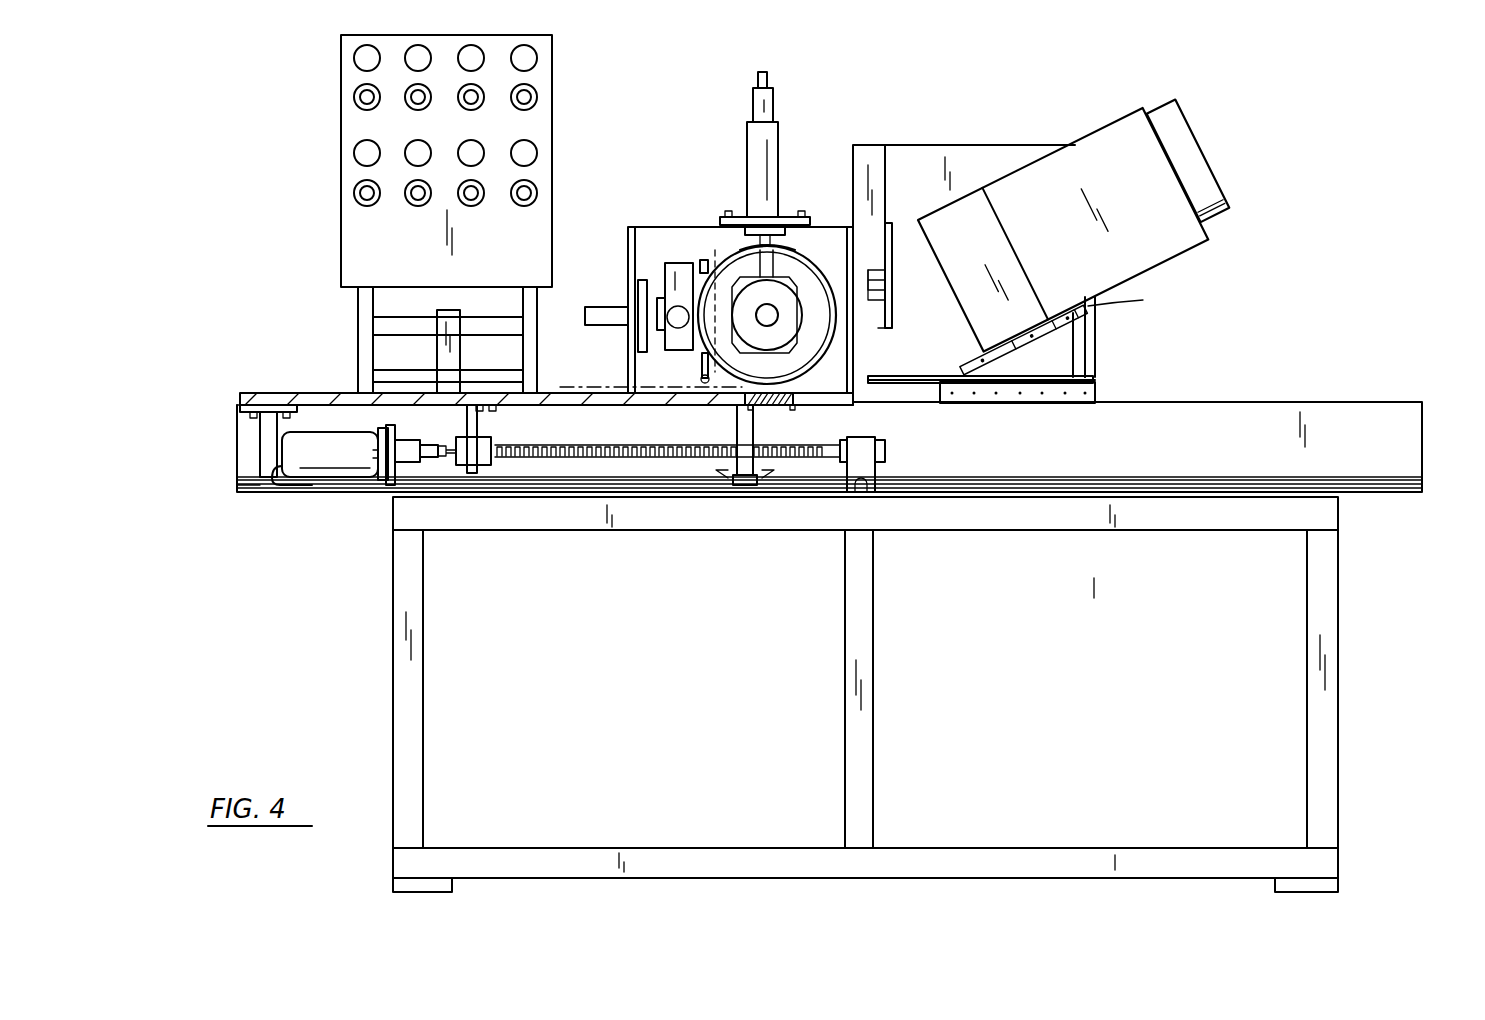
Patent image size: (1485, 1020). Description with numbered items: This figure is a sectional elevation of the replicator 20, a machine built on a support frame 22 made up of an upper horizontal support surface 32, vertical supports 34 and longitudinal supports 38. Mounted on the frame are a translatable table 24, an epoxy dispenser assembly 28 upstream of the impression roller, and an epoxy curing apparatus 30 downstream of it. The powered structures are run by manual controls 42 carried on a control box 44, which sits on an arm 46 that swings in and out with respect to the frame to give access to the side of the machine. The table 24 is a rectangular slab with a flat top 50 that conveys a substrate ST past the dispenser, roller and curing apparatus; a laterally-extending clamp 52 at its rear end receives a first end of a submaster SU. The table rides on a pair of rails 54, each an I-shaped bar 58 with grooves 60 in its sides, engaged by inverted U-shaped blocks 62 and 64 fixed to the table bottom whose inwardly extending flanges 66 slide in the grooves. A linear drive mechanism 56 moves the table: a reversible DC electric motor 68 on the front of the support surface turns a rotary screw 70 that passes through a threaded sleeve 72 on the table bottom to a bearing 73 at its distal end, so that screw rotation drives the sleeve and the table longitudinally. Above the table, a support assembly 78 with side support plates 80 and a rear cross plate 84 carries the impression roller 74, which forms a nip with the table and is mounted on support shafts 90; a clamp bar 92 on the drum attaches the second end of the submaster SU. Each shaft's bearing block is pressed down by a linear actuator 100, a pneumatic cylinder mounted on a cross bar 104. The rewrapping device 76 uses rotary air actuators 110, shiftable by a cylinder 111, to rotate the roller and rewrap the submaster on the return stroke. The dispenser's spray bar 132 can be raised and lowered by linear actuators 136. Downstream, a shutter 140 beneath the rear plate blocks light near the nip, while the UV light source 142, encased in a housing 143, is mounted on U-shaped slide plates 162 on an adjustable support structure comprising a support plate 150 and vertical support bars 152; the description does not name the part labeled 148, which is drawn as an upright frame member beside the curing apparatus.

The replicator 20 is at (1046, 72).
The support frame 22 is at (882, 694).
The translatable table 24 is at (236, 390).
The epoxy dispenser assembly 28 is at (700, 378).
The epoxy curing apparatus 30 is at (1100, 216).
The upper horizontal support surface 32 is at (400, 484).
The vertical supports 34 is at (395, 620).
The longitudinal supports 38 is at (640, 826).
The manual controls 42 is at (526, 95).
The control box 44 is at (341, 85).
The arm 46 is at (358, 312).
The flat top 50 is at (262, 393).
The clamp 52 is at (770, 406).
The rails 54 is at (1396, 476).
The linear drive mechanism 56 is at (292, 474).
The I-shaped bar 58 is at (1235, 477).
The grooves 60 is at (1062, 497).
The inverted U-shaped block 62 is at (268, 435).
The inverted U-shaped block 64 is at (740, 470).
The inwardly extending flanges 66 is at (760, 484).
The reversible DC electric motor 68 is at (312, 472).
The rotary screw 70 is at (642, 445).
The threaded sleeve 72 is at (484, 442).
The bearing 73 is at (866, 440).
The impression roller 74 is at (853, 363).
The rewrapping device 76 is at (604, 328).
The support assembly 78 is at (628, 233).
The side support plates 80 is at (642, 228).
The rear cross plate 84 is at (848, 235).
The support shafts 90 is at (772, 318).
The clamp bar 92 is at (772, 235).
The linear actuator 100 is at (780, 125).
The cross bar 104 is at (806, 215).
The rotary air actuator 110 is at (668, 275).
The cylinder 111 is at (598, 308).
The spray bar 132 is at (1092, 380).
The linear actuators 136 is at (702, 262).
The shutter 140 is at (888, 324).
The UV light source 142 is at (1220, 145).
The housing 143 is at (1070, 288).
The frame 148 is at (872, 150).
The support plate 150 is at (1016, 378).
The vertical support bars 152 is at (1087, 345).
The U-shaped slide plates 162 is at (1033, 313).
The submaster SU is at (720, 248).
The substrate ST is at (343, 393).